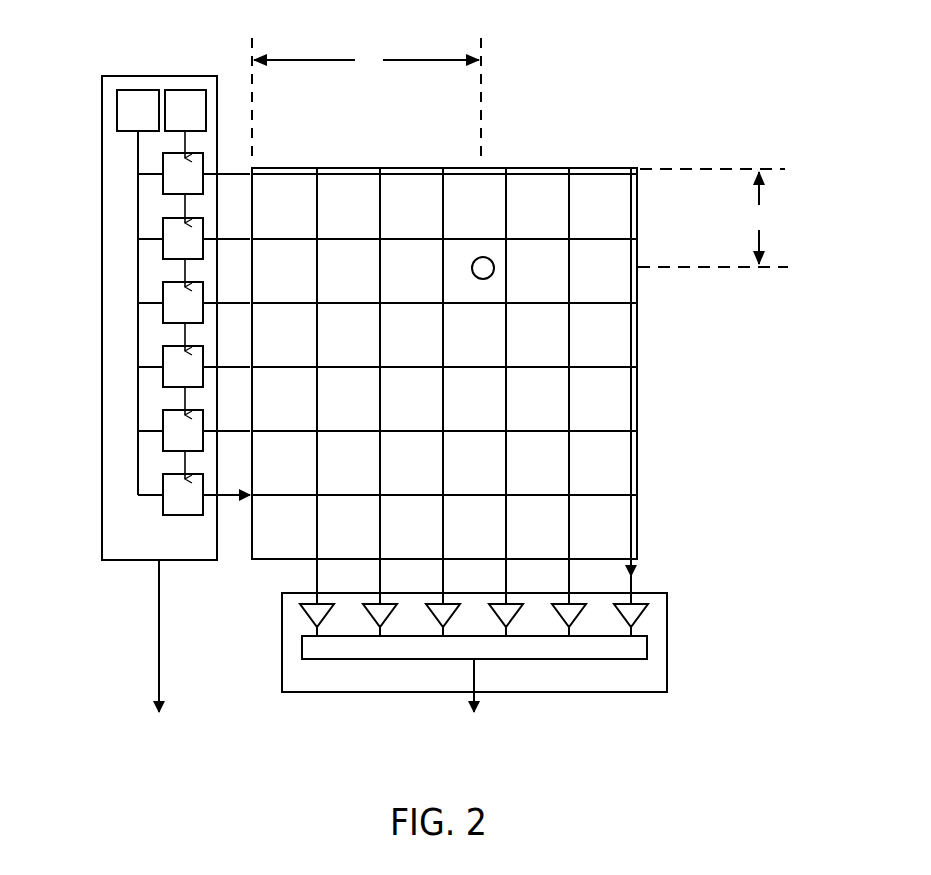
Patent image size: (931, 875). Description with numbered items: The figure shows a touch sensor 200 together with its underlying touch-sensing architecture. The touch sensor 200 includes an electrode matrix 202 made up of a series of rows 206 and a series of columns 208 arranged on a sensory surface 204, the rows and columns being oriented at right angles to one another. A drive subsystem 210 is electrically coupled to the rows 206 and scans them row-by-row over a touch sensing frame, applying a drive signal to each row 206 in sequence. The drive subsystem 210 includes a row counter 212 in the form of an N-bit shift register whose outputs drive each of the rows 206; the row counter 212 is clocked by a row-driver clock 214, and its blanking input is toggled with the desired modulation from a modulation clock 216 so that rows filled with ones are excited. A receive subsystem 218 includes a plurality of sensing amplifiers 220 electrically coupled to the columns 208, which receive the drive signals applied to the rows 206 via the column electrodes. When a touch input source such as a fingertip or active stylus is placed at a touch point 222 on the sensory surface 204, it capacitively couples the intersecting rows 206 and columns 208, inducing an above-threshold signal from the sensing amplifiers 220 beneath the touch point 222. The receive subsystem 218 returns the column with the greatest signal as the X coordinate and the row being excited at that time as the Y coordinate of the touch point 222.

The touch sensor 200 is at (720, 36).
The electrode matrix 202 is at (625, 100).
The sensory surface 204 is at (638, 522).
The rows 206 is at (620, 495).
The columns 208 is at (443, 182).
The drive subsystem 210 is at (101, 329).
The row counter 212 is at (110, 476).
The row-driver clock 214 is at (183, 90).
The modulation clock 216 is at (138, 90).
The receive subsystem 218 is at (578, 691).
The sensing amplifiers 220 is at (658, 613).
The touch point 222 is at (484, 256).